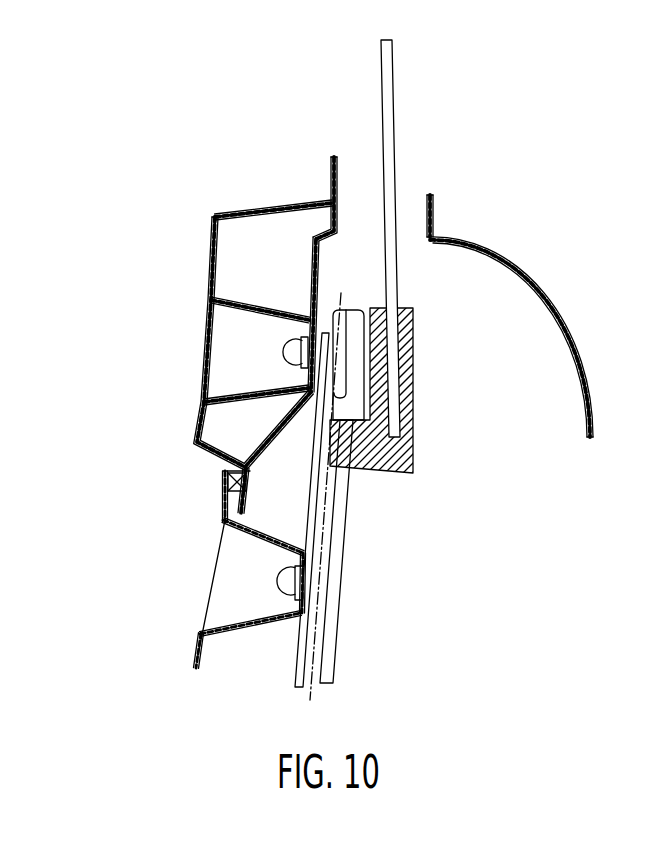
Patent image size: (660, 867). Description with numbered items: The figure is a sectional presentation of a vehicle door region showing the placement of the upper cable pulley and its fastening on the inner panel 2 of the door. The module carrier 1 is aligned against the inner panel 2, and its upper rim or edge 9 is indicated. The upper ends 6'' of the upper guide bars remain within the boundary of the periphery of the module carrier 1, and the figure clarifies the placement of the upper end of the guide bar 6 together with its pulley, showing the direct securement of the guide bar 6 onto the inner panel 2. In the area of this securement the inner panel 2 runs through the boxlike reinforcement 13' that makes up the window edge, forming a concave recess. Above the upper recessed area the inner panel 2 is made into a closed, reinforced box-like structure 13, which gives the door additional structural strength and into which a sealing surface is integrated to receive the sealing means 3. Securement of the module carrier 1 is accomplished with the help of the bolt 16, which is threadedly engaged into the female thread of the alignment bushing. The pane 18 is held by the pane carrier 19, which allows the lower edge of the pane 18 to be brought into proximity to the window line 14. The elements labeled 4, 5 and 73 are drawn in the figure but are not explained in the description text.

The module carrier 1 is at (195, 653).
The inner panel 2 is at (212, 252).
The sealing means 3 is at (252, 490).
The curved cover wall 4 is at (577, 307).
The interior space 5 is at (535, 380).
The guide bar 6 is at (296, 496).
The ends of the upper guide bars 6'' is at (357, 195).
The upper rim of the module carrier 9 is at (206, 462).
The box-like structure 13 is at (283, 313).
The boxlike reinforcement 13' is at (302, 193).
The window line 14 is at (470, 160).
The bolt 16 is at (293, 350).
The pane 18 is at (392, 54).
The pane carrier 19 is at (388, 458).
The retaining clip 73 is at (352, 308).